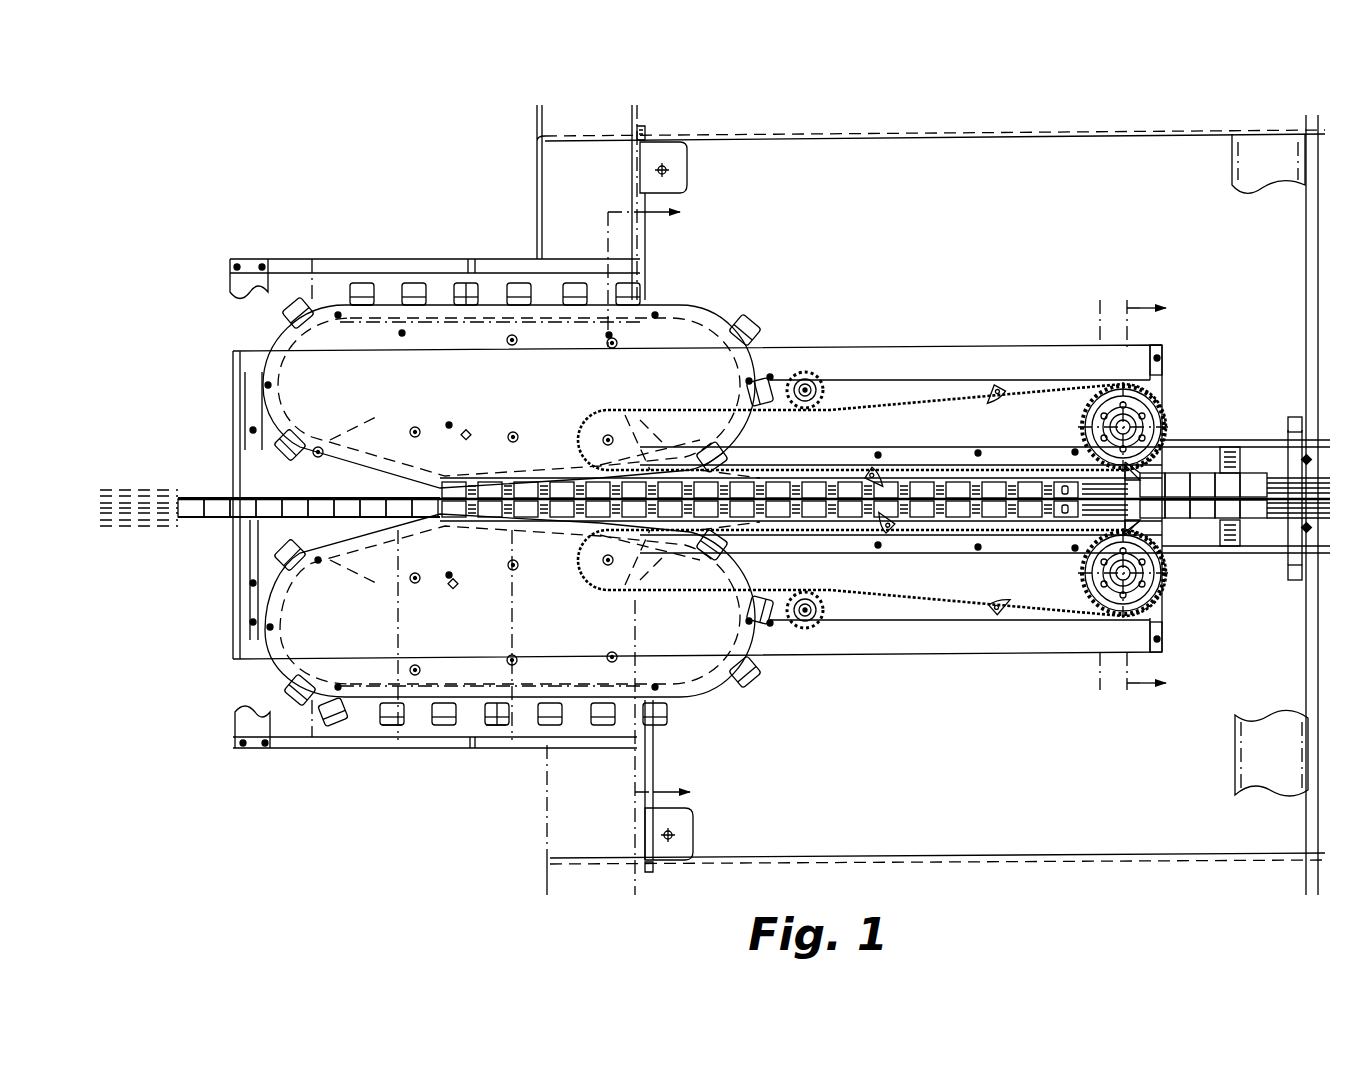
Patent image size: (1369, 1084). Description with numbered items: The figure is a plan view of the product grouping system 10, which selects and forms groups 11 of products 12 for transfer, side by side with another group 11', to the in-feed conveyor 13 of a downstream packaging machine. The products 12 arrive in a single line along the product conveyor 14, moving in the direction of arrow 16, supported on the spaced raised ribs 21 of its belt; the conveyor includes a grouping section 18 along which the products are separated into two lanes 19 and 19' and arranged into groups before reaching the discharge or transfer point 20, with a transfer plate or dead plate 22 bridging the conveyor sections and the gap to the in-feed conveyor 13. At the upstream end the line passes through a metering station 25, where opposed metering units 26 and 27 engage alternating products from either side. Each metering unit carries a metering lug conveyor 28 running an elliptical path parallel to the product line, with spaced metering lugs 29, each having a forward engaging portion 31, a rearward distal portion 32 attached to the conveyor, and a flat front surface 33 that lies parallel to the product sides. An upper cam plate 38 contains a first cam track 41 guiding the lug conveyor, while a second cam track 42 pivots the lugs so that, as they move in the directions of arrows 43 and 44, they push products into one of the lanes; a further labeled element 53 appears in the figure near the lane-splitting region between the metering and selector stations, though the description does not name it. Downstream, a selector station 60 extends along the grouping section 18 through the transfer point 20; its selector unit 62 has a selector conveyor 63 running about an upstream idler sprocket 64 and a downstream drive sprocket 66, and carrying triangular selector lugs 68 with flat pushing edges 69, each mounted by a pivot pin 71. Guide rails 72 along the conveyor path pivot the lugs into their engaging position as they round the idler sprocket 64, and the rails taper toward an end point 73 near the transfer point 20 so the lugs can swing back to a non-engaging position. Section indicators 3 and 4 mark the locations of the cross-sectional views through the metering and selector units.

The product grouping system 10 is at (357, 176).
The group of products 11 is at (1235, 526).
The another group of products 11' is at (1214, 470).
The products 12 is at (192, 500).
The in-feed conveyor 13 is at (1288, 549).
The product conveyor 14 is at (123, 514).
The arrow indicating path of travel 16 is at (164, 473).
The grouping section 18 is at (793, 524).
The lane 19 is at (844, 551).
The lane 19' is at (840, 449).
The discharge or transfer point 20 is at (1153, 522).
The raised ribs 21 is at (103, 503).
The transfer plate or dead plate 22 is at (540, 512).
The metering station 25 is at (235, 698).
The metering unit 26 is at (456, 680).
The metering unit 27 is at (403, 328).
The metering lug conveyor 28 is at (566, 318).
The metering lugs 29 is at (402, 273).
The forward proximal engaging portion 31 is at (356, 281).
The rearward distal portion 32 is at (363, 300).
The front surface 33 is at (465, 283).
The upper cam plate 38 is at (350, 395).
The first cam track 41 is at (711, 358).
The second cam track 42 is at (330, 442).
The arrow indicating lug movement 43 is at (510, 457).
The arrow indicating lug movement 44 is at (427, 448).
The lane separating guide 53 is at (737, 488).
The selector station 60 is at (912, 338).
The selector unit 62 is at (961, 392).
The selector conveyor 63 is at (854, 378).
The upstream idler sprocket 64 is at (592, 396).
The downstream drive sprocket 66 is at (1152, 412).
The selector lugs 68 is at (997, 390).
The forward pushing edge 69 is at (1003, 400).
The pivot pin 71 is at (877, 464).
The guide rails 72 is at (921, 446).
The end point 73 is at (1113, 395).
The section line 3- 3 is at (657, 501).
The section line 4- 4 is at (1143, 496).